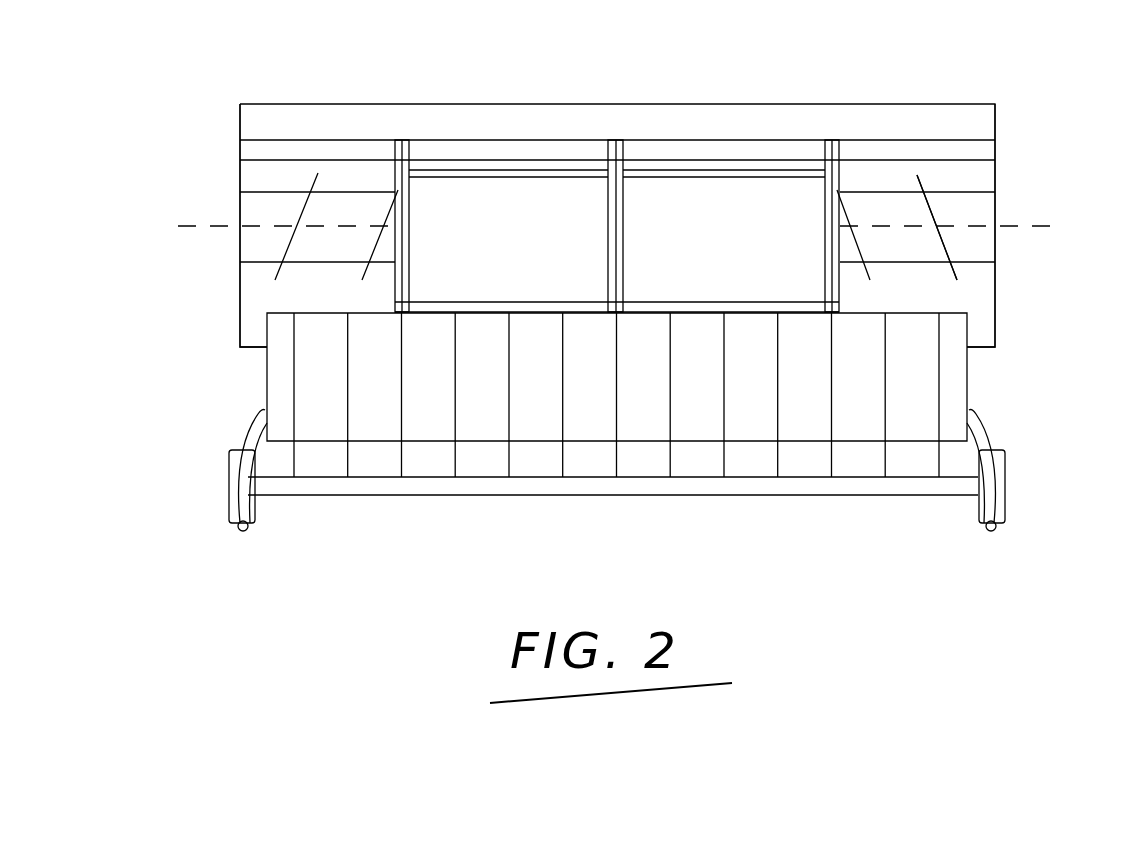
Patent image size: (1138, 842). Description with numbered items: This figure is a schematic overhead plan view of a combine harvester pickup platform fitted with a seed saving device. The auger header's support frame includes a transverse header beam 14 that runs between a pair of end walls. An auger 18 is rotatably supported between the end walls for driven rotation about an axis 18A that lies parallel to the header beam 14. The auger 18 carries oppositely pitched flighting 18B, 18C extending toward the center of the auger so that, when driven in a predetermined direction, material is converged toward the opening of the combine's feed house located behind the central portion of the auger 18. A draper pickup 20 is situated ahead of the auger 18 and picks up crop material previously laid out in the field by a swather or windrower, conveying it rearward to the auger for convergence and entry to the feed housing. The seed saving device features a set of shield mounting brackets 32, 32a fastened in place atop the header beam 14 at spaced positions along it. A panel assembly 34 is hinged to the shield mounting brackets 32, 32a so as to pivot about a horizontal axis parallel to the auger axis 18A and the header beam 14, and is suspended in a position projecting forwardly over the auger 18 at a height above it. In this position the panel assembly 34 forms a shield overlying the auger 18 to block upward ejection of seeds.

The header beam 14 is at (355, 148).
The auger 18 is at (963, 235).
The axis 18A is at (1033, 218).
The flighting 18B is at (302, 203).
The flighting 18C is at (933, 212).
The draper pickup 20 is at (327, 380).
The shield mounting bracket 32 is at (399, 137).
The shield mounting bracket 32a is at (618, 137).
The panel assembly 34 is at (766, 225).